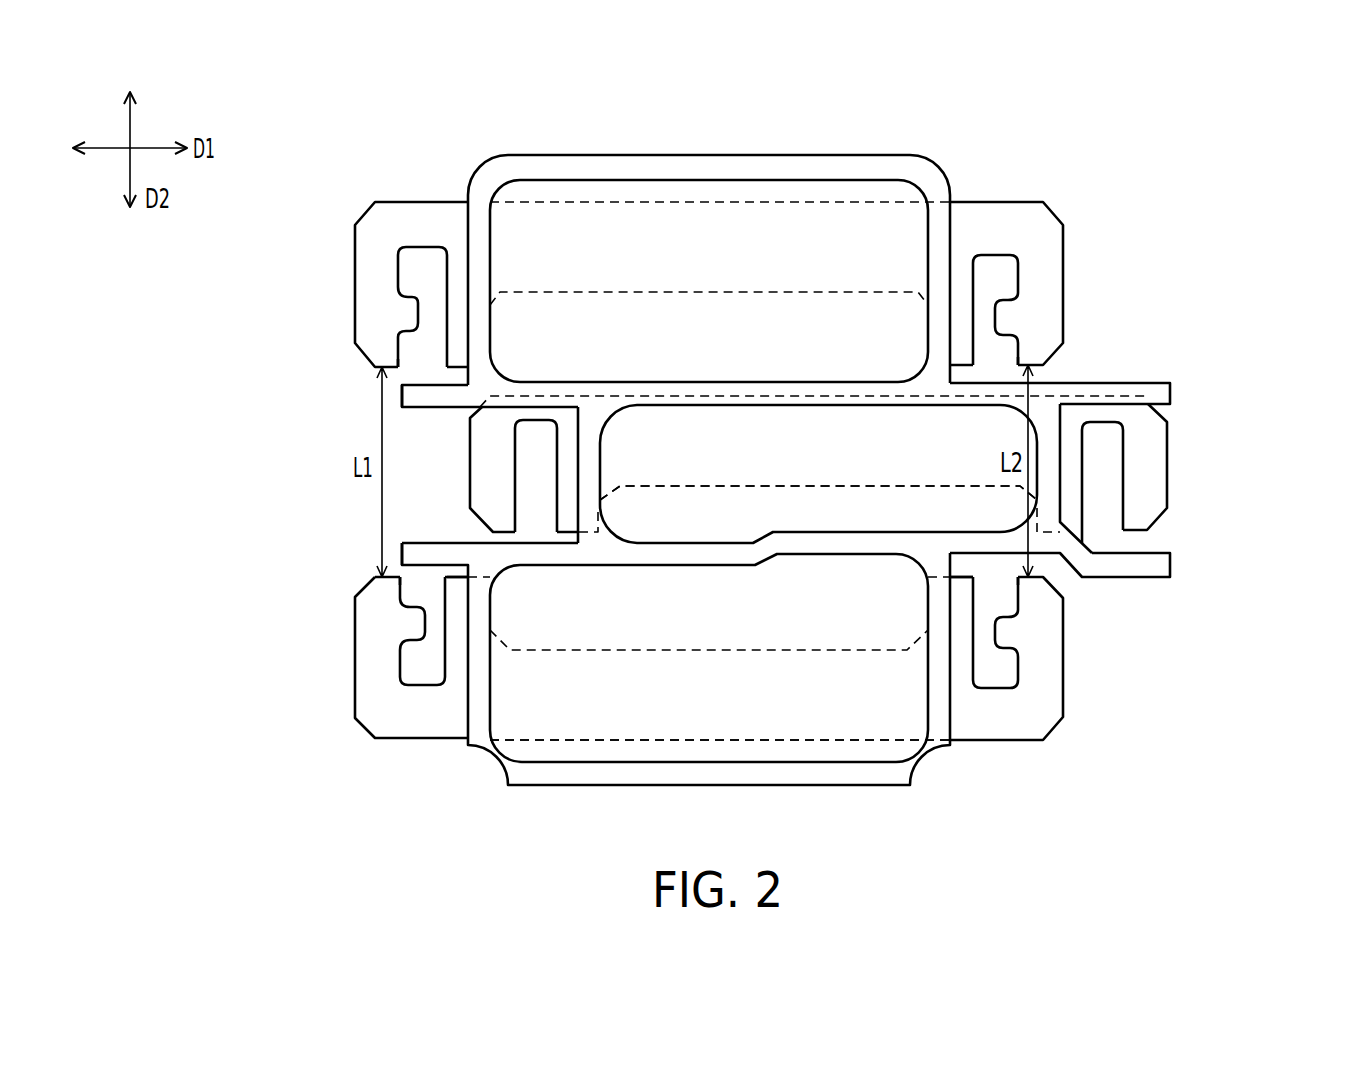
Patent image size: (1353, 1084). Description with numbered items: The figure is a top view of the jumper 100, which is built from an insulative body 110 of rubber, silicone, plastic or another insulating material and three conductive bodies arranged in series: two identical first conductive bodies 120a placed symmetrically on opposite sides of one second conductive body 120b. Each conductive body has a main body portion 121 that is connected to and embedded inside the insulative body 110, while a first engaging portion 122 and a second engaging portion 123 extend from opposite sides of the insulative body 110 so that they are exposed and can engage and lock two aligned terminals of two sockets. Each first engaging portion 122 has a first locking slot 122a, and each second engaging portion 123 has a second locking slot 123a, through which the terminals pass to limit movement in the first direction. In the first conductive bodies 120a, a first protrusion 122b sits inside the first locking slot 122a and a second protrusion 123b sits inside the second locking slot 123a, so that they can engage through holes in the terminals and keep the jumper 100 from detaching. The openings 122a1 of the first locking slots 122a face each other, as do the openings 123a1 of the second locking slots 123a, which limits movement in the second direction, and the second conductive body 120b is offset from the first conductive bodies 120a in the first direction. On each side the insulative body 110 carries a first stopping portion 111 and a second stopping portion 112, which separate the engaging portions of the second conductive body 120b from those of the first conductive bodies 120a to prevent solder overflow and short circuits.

The jumper 100 is at (1309, 862).
The insulative body 110 is at (742, 513).
The first stopping portion 111 is at (416, 475).
The second stopping portion 112 is at (844, 465).
The first conductive body 120a is at (902, 740).
The second conductive body 120b is at (818, 297).
The main body portion 121 is at (851, 460).
The first engaging portion 122 is at (380, 466).
The first locking slot 122a is at (400, 457).
The opening 122a1 is at (334, 464).
The first protrusion 122b is at (334, 458).
The second engaging portion 123 is at (1092, 478).
The second locking slot 123a is at (1133, 477).
The opening 123a1 is at (1082, 483).
The second protrusion 123b is at (1079, 473).